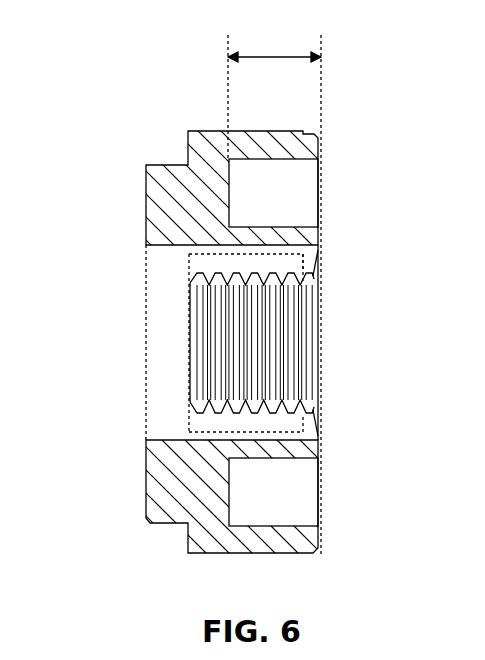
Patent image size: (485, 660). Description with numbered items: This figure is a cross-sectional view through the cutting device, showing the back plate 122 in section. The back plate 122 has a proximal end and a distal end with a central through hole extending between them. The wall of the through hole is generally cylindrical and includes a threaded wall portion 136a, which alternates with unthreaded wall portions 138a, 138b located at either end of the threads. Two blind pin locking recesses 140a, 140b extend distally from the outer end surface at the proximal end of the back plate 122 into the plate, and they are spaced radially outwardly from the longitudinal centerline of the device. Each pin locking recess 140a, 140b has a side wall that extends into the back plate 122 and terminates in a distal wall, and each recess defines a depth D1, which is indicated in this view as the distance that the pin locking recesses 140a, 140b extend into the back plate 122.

The back plate 122 is at (166, 164).
The pin locking recess 140b is at (318, 192).
The pin locking recess 140a is at (318, 495).
The threaded wall portion 136a is at (222, 348).
The unthreaded wall portion 138b is at (217, 263).
The unthreaded wall portion 138a is at (217, 422).
The depth D1 is at (275, 57).